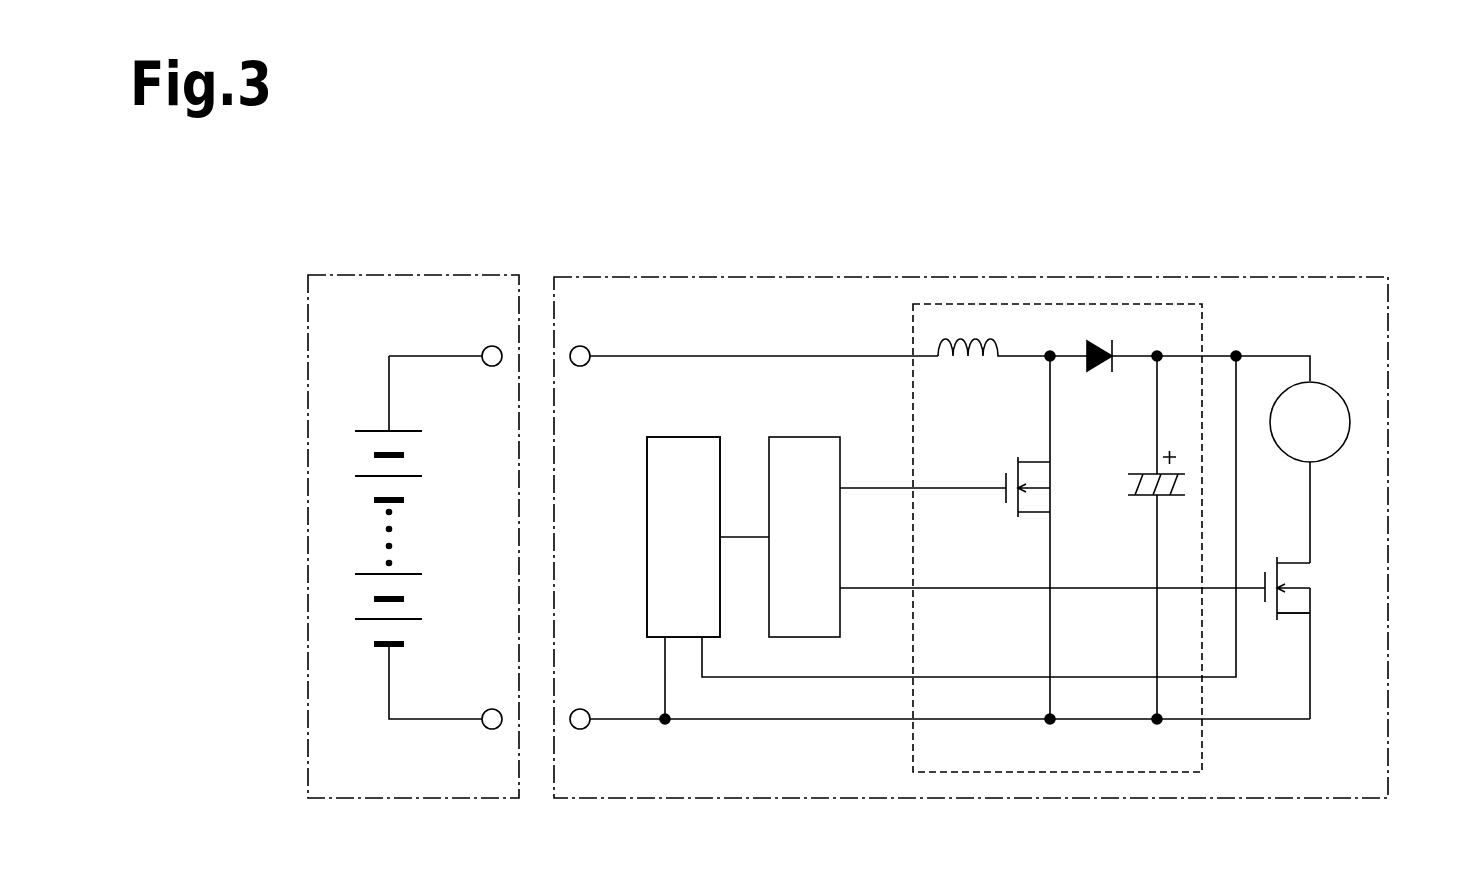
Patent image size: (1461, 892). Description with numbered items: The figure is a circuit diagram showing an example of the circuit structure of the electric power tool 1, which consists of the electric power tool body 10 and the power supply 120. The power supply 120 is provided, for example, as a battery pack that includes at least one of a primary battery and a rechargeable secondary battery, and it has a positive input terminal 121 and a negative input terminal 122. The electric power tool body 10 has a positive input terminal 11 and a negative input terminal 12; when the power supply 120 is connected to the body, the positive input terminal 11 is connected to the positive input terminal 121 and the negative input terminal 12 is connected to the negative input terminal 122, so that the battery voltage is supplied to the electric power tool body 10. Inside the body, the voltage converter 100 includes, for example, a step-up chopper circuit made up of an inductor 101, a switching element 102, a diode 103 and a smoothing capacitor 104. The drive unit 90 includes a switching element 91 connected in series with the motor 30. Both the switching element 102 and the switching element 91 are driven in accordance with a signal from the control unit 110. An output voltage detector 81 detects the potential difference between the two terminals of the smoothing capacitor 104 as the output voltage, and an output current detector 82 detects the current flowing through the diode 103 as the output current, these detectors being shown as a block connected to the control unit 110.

The electric power tool 1 is at (231, 214).
The electric power tool body 10 is at (1355, 277).
The positive input terminal 11 is at (590, 349).
The negative input terminal 12 is at (590, 711).
The motor 30 is at (1340, 392).
The output voltage detector 81 is at (700, 437).
The output current detector 82 is at (683, 537).
The drive unit 90 is at (1323, 626).
The switching element 91 is at (1272, 621).
The voltage converter 100 is at (1204, 316).
The inductor 101 is at (998, 332).
The switching element 102 is at (1018, 462).
The diode 103 is at (1114, 344).
The smoothing capacitor 104 is at (1135, 497).
The control unit 110 is at (827, 437).
The power supply 120 is at (308, 300).
The positive input terminal 121 is at (485, 348).
The negative input terminal 122 is at (486, 711).